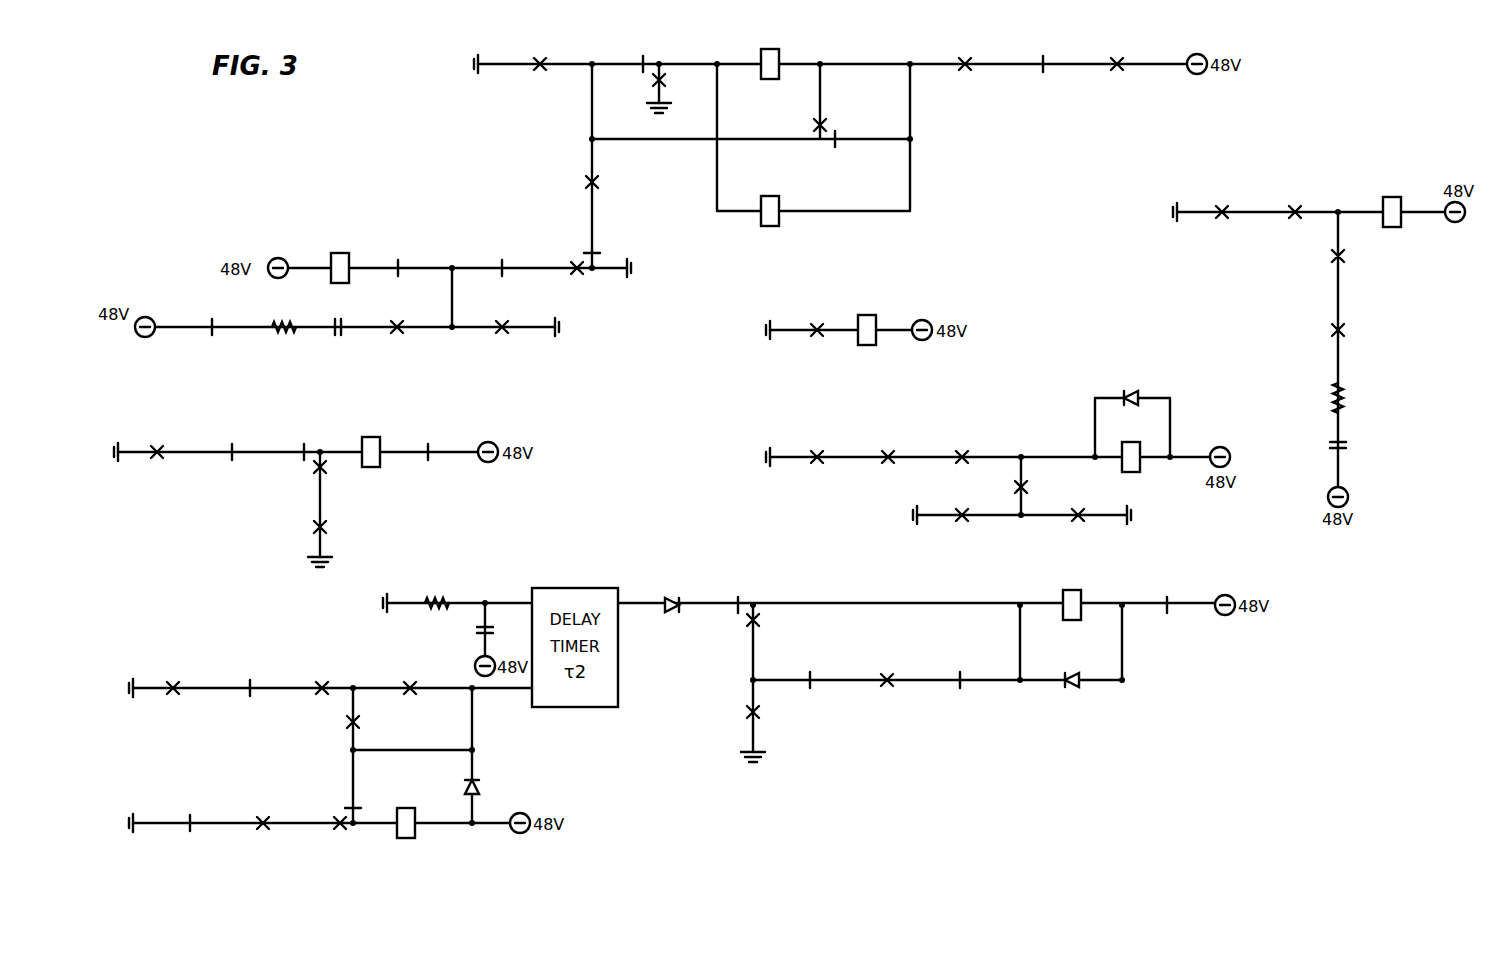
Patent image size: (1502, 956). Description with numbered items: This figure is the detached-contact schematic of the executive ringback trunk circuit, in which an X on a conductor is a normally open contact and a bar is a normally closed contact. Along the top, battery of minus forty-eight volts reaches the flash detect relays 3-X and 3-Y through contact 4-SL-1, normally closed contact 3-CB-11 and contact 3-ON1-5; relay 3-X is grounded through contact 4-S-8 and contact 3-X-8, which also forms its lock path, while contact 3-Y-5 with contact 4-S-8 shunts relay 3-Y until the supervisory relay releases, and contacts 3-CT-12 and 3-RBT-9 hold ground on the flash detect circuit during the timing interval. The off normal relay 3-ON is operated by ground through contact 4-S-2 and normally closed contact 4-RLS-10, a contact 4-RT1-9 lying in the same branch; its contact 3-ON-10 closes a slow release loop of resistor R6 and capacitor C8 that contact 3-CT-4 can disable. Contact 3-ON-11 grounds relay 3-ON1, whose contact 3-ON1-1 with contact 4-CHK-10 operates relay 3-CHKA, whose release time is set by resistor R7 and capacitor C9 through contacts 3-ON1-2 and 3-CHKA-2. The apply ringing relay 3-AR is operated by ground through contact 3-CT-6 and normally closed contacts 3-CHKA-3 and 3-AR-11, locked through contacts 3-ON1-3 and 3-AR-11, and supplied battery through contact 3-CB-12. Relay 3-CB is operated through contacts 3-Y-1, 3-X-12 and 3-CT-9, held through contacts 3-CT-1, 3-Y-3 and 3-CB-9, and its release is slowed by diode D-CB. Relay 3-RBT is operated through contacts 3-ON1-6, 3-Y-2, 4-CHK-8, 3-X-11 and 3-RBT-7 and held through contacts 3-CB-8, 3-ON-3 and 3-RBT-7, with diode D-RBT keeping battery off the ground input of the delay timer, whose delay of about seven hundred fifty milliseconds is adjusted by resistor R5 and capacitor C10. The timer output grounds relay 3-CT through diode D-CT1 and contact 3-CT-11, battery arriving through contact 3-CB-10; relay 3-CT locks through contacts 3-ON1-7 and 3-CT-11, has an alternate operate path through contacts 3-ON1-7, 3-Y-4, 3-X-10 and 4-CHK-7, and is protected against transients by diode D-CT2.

The normally open contact 4-S-8 is at (540, 75).
The transfer contact 3-X-8 is at (648, 70).
The flash detect relay 3-X is at (770, 75).
The normally closed contact 3-Y-5 is at (827, 130).
The flash detect relay 3-Y is at (770, 199).
The normally open contact 3-ON1-5 is at (964, 75).
The normally closed contact 3-CB-11 is at (1045, 78).
The normally open contact 4-SL-1 is at (1113, 75).
The normally open contact 3-RBT-9 is at (559, 180).
The transfer contact 3-CT-12 is at (580, 258).
The contact 4-RT1-9 is at (500, 257).
The off normal relay 3-ON is at (340, 256).
The normally closed contact 4-RLS-10 is at (405, 279).
The normally closed contact 3-CT-4 is at (211, 316).
The resistor R6 is at (284, 339).
The capacitor C8 is at (337, 338).
The normally open contact 3-ON-10 is at (401, 339).
The normally open contact 4-S-2 is at (502, 339).
The normally open contact 3-CT-6 is at (152, 463).
The normally closed contact 3-CHKA-3 is at (232, 441).
The apply ringing relay 3-AR is at (371, 441).
The transfer contact 3-AR-11 is at (308, 460).
The normally closed contact 3-CB-12 is at (435, 462).
The normally open contact 3-ON1-3 is at (355, 527).
The relay 3-ON1 is at (866, 320).
The normally open contact 3-ON-11 is at (817, 338).
The normally open contact 3-Y-1 is at (813, 445).
The normally open contact 3-X-12 is at (887, 469).
The normally open contact 3-CT-9 is at (666, 579).
The normally open contact 3-CB-9 is at (1050, 486).
The diode D-CB is at (1131, 386).
The relay 3-CB is at (1125, 447).
The normally open contact 3-CT-1 is at (959, 525).
The normally open contact 3-Y-3 is at (1078, 525).
The normally open contact 3-ON1-1 is at (1219, 221).
The normally open contact 4-CHK-10 is at (1297, 200).
The relay 3-CHKA is at (1392, 195).
The normally open contact 3-CHKA-2 is at (1378, 262).
The normally open contact 3-ON1-2 is at (1373, 330).
The resistor R7 is at (1352, 398).
The capacitor C9 is at (1350, 446).
The resistor R5 is at (437, 593).
The capacitor C10 is at (503, 628).
The transient protection diode D-CT1 is at (667, 593).
The transfer contact 3-CT-11 is at (740, 616).
The relay 3-CT is at (1068, 618).
The normally closed contact 3-CB-10 is at (1168, 622).
The normally closed contact 3-X-10 is at (804, 670).
The normally open contact 3-Y-4 is at (885, 693).
The normally closed contact 4-CHK-7 is at (957, 670).
The diode D-CT2 is at (1071, 692).
The normally open contact 3-ON1-7 is at (718, 713).
The normally open contact 3-ON1-6 is at (169, 675).
The normally closed contact 3-X-11 is at (249, 700).
The normally open contact 3-Y-2 is at (320, 680).
The normally open contact 4-CHK-8 is at (410, 675).
The transfer contact 3-RBT-7 is at (337, 815).
The relay 3-RBT is at (406, 812).
The diode D-RBT is at (500, 784).
The normally closed contact 3-CB-8 is at (185, 810).
The normally open contact 3-ON-3 is at (263, 833).